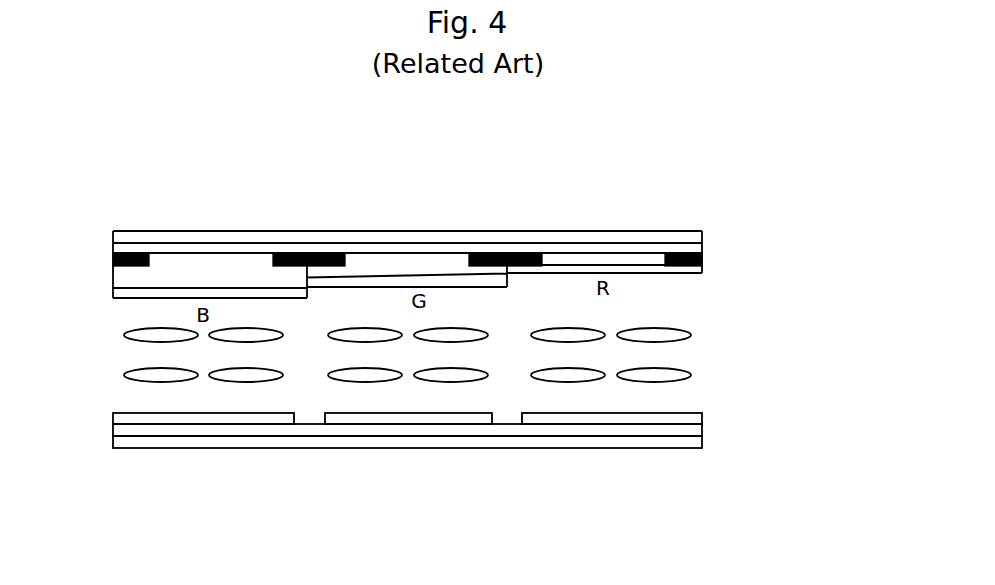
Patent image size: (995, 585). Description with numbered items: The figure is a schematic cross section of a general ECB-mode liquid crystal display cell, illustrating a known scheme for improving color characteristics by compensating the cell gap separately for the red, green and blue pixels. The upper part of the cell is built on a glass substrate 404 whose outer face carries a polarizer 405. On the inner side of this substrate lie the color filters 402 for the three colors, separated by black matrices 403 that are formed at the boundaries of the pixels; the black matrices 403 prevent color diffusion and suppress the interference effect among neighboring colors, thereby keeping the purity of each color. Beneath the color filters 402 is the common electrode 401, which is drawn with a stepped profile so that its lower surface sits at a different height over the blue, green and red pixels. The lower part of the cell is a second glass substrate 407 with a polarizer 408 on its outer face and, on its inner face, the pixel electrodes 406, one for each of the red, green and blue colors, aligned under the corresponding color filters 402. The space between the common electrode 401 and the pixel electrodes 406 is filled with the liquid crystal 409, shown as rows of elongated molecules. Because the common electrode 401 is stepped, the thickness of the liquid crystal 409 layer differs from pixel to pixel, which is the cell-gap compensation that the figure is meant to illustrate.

The common electrode 401 is at (130, 293).
The color filters 402 is at (200, 258).
The black matrices 403 is at (125, 253).
The glass substrate 404 is at (695, 247).
The polarizer 405 is at (702, 235).
The pixel electrodes 406 is at (702, 418).
The glass substrate 407 is at (702, 430).
The polarizer 408 is at (683, 448).
The liquid crystal 409 is at (668, 373).